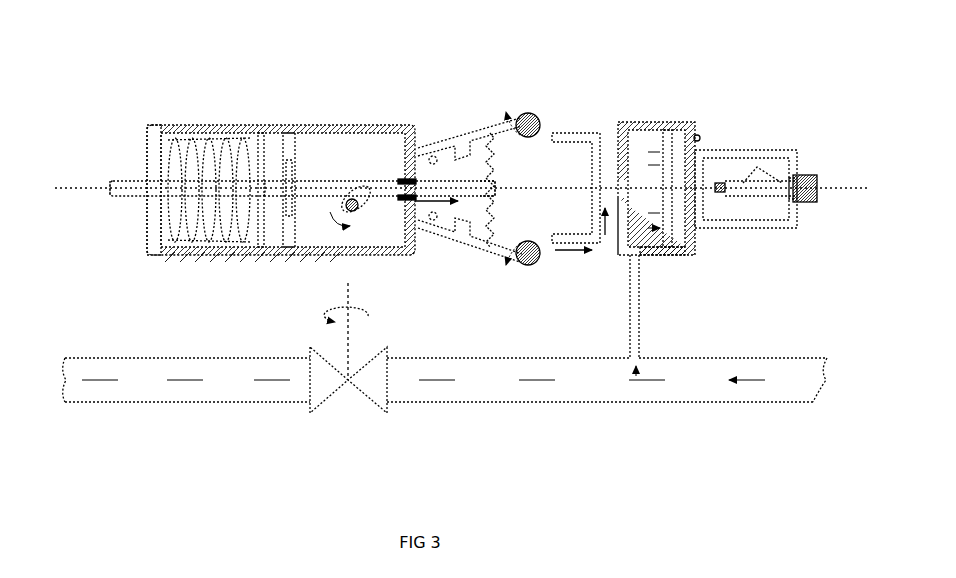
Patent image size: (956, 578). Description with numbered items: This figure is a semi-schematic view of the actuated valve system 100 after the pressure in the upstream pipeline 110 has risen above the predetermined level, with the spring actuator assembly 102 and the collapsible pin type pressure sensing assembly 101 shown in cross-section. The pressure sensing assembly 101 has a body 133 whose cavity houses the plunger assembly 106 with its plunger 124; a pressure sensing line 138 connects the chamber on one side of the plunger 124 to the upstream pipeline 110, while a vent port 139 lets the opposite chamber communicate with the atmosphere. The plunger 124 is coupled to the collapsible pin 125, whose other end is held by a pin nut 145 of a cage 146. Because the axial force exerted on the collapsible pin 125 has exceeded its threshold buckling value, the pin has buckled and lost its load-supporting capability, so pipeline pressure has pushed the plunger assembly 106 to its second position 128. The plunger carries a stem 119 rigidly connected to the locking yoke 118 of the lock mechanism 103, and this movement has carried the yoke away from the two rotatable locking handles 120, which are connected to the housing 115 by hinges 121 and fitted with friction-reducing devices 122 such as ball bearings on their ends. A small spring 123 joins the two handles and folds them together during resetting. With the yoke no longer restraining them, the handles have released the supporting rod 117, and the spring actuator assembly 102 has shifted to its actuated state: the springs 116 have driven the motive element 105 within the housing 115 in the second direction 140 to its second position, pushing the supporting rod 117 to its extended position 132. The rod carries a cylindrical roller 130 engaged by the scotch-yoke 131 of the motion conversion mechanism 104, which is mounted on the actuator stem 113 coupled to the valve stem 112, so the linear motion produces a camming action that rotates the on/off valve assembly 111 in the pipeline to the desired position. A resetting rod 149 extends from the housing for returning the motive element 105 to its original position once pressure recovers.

The actuated valve system 100 is at (320, 52).
The collapsible pin type pressure sensing assembly 101 is at (712, 112).
The spring actuator assembly 102 is at (172, 112).
The lock mechanism 103 is at (500, 106).
The motion conversion mechanism 104 is at (330, 172).
The motive element 105 is at (233, 238).
The plunger assembly 106 is at (663, 117).
The upstream pipeline 110 is at (728, 398).
The on/off valve assembly 111 is at (332, 395).
The valve stem 112 is at (345, 345).
The actuator stem 113 is at (364, 192).
The housing 115 is at (158, 235).
The springs 116 is at (166, 158).
The supporting rod 117 is at (422, 186).
The locking yoke 118 is at (583, 135).
The stem 119 is at (605, 240).
The rotatable locking handles 120 is at (482, 243).
The hinges 121 is at (428, 225).
The friction-reducing devices 122 is at (528, 262).
The small spring 123 is at (488, 168).
The plunger 124 is at (692, 247).
The collapsible pin 125 is at (742, 185).
The second position 128 is at (667, 253).
The cylindrical roller 130 is at (410, 178).
The scotch-yoke 131 is at (354, 198).
The extended position 132 is at (496, 196).
The body 133 is at (688, 102).
The pressure sensing line 138 is at (638, 327).
The vent port 139 is at (700, 136).
The second direction 140 is at (580, 258).
The pin nut 145 is at (815, 192).
The cage 146 is at (800, 200).
The resetting rod 149 is at (110, 185).